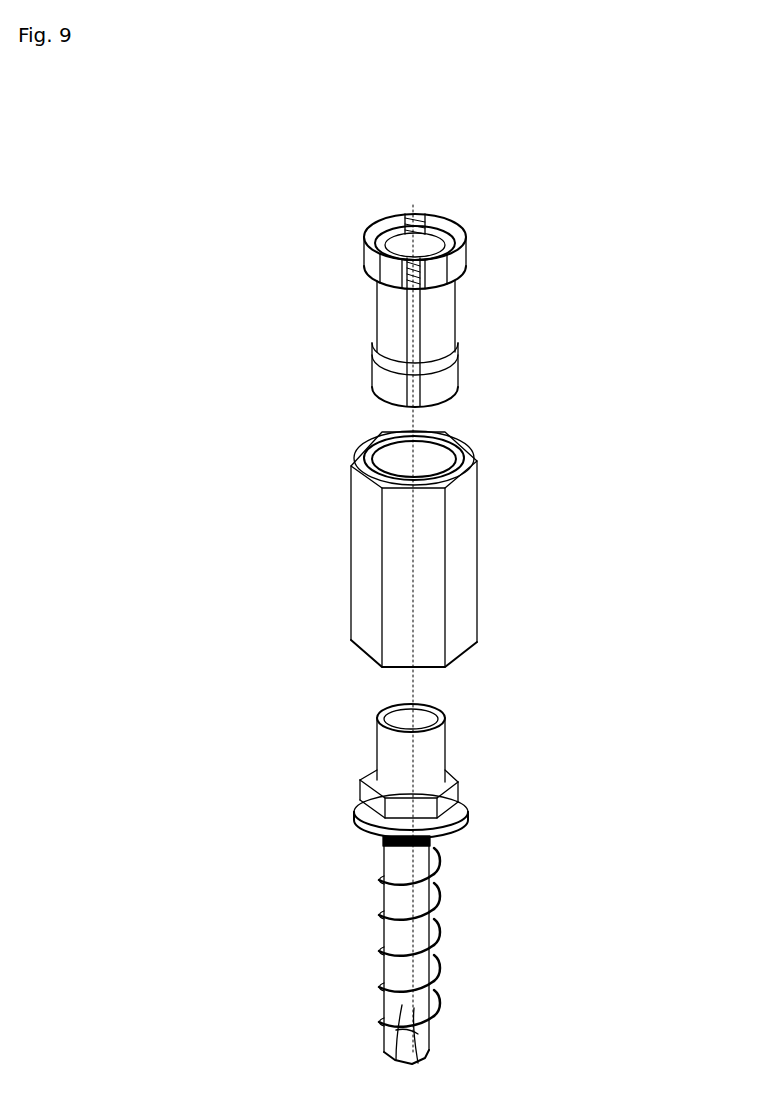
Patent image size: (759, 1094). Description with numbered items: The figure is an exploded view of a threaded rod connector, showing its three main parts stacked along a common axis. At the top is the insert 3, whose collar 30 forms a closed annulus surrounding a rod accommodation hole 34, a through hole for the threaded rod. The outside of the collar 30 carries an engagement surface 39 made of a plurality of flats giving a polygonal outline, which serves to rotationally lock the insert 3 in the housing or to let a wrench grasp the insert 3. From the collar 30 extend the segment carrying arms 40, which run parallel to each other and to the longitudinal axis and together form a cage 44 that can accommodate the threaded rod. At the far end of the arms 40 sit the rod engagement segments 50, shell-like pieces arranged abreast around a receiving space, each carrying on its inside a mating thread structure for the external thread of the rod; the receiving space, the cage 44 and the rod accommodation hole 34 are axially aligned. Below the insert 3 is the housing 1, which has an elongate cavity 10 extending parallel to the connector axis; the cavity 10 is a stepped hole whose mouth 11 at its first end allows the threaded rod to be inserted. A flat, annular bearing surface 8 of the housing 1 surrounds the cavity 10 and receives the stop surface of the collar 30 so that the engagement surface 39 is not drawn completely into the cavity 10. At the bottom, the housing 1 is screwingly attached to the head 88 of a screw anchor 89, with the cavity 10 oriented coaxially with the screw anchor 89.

The housing 1 is at (362, 547).
The insert 3 is at (452, 372).
The bearing surface 8 is at (368, 462).
The cavity 10 is at (442, 455).
The mouth 11 is at (492, 442).
The collar 30 is at (450, 268).
The rod accommodation hole 34 is at (402, 247).
The engagement surface 39 is at (463, 225).
The segment carrying arm 40 is at (440, 325).
The cage 44 is at (348, 323).
The rod engagement segment 50 is at (500, 365).
The head 88 is at (373, 795).
The screw anchor 89 is at (400, 933).